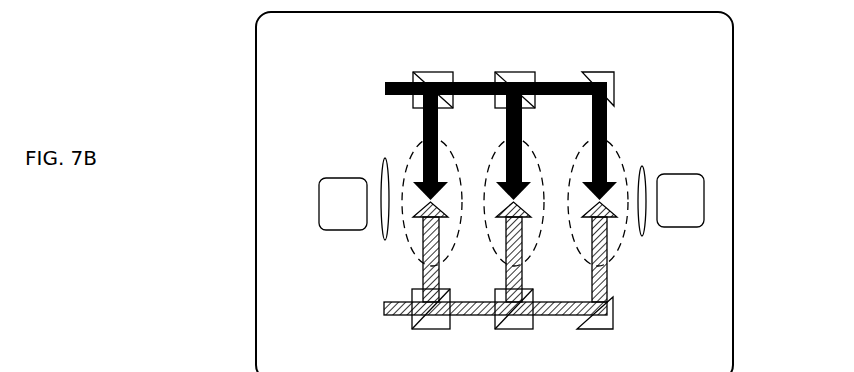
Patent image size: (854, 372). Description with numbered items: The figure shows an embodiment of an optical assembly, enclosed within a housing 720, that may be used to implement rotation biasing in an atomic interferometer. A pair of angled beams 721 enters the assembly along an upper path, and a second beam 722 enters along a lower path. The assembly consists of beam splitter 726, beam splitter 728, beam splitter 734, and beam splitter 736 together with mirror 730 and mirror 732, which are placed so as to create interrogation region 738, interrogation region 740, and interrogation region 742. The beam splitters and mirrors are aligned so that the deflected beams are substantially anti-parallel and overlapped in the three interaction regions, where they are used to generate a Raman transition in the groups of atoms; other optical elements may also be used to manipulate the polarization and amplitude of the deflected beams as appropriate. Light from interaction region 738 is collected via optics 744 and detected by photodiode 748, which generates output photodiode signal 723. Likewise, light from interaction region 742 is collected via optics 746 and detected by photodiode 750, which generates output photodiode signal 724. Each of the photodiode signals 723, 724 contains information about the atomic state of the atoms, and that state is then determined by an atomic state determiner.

The optical module housing 720 is at (253, 22).
The pair of angled beams 721 is at (383, 88).
The second input beam 722 is at (376, 307).
The output photodiode signal 723 is at (317, 203).
The output photodiode signal 724 is at (704, 200).
The beam splitter 726 is at (437, 69).
The beam splitter 728 is at (516, 69).
The mirror 730 is at (603, 69).
The mirror 732 is at (598, 332).
The beam splitter 734 is at (516, 332).
The beam splitter 736 is at (434, 332).
The interrogation region 738 is at (411, 146).
The interrogation region 740 is at (530, 141).
The interrogation region 742 is at (623, 143).
The optics 744 is at (383, 171).
The optics 746 is at (644, 167).
The photodiode 748 is at (343, 231).
The photodiode 750 is at (680, 228).